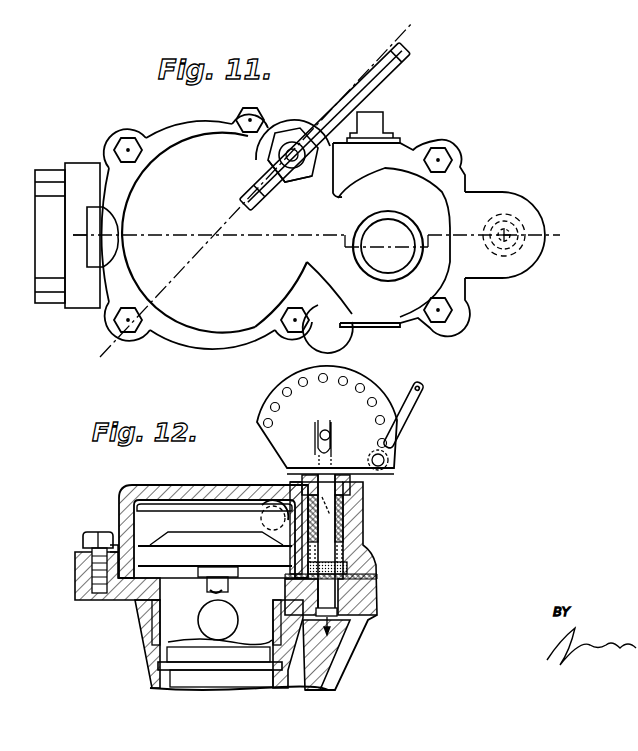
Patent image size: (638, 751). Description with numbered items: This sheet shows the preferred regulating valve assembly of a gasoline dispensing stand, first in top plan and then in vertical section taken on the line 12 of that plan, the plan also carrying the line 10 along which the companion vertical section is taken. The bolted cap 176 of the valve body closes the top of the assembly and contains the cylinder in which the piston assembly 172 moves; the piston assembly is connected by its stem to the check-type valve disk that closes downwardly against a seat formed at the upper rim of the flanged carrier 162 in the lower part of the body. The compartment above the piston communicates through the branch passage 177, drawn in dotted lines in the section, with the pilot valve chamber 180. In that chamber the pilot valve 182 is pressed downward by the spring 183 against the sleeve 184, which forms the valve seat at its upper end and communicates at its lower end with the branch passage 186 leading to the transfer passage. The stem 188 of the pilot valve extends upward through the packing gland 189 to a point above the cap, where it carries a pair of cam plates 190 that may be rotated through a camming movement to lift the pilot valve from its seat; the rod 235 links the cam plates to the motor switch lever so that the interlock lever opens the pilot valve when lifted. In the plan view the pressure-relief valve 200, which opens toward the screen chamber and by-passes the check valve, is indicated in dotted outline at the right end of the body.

In FIG. 11, the section line 10— 10 is at (33, 220).
In FIG. 11, the section line 12— 12 is at (100, 357).
In FIG. 12, the carrier 162 is at (188, 667).
In FIG. 12, the piston assembly 172 is at (220, 545).
In FIG. 11, the cap 176 is at (192, 228).
In FIG. 12, the cap 176 is at (183, 486).
In FIG. 12, the branch passage 177 is at (283, 495).
In FIG. 12, the pilot valve chamber 180 is at (343, 560).
In FIG. 12, the pilot valve 182 is at (357, 570).
In FIG. 12, the spring 183 is at (343, 540).
In FIG. 12, the sleeve 184 is at (380, 597).
In FIG. 12, the branch passage 186 is at (303, 673).
In FIG. 11, the stem 188 is at (267, 147).
In FIG. 12, the stem 188 is at (352, 503).
In FIG. 12, the packing gland 189 is at (367, 513).
In FIG. 11, the cam plates 190 is at (312, 113).
In FIG. 12, the cam plates 190 is at (378, 390).
In FIG. 11, the pressure-relief valve 200 is at (520, 218).
In FIG. 11, the rod 235 is at (392, 70).
In FIG. 12, the rod 235 is at (418, 407).